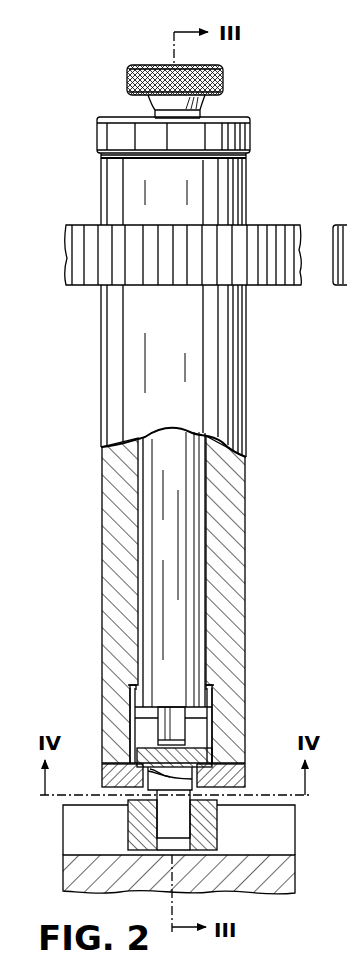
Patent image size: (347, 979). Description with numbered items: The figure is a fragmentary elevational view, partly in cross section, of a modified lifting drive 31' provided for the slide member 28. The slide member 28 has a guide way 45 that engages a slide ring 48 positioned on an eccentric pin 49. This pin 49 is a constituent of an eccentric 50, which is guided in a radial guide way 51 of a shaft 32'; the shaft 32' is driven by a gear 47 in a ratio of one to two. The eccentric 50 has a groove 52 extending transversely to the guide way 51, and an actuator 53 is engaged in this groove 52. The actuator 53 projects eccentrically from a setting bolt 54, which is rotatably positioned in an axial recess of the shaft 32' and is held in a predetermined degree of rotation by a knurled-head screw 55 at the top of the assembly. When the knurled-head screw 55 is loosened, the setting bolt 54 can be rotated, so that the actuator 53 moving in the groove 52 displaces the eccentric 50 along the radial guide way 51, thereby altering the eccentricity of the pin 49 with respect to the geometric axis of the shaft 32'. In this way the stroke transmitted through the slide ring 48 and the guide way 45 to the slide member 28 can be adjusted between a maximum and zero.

The knurled-head screw 55 is at (220, 78).
The gear 47 is at (84, 238).
The shaft 32' is at (147, 458).
The setting bolt 54 is at (170, 568).
The actuator 53 is at (167, 717).
The groove 52 is at (143, 733).
The eccentric 50 is at (208, 752).
The radial guide way 51 is at (212, 759).
The eccentric pin 49 is at (173, 820).
The slide ring 48 is at (145, 813).
The guide way 45 is at (277, 830).
The slide member 28 is at (280, 880).
The lifting drive 31' is at (279, 945).